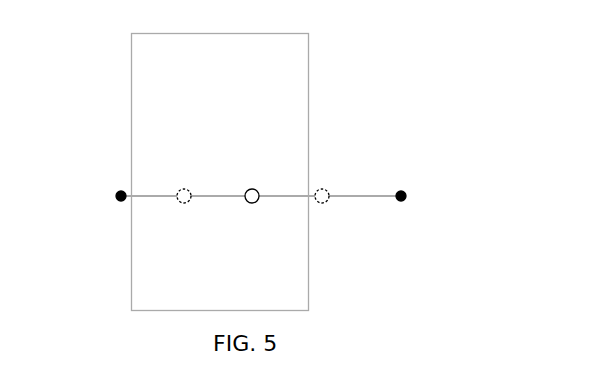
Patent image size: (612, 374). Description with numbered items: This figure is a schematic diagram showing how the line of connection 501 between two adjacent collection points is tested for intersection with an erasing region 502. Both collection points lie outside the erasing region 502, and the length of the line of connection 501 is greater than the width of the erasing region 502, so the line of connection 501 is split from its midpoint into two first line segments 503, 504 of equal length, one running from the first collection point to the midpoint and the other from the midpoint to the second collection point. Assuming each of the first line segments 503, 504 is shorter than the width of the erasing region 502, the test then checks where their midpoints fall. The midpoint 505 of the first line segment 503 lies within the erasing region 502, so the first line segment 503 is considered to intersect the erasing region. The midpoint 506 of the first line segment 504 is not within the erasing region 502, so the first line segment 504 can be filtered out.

The line of connection 501 is at (130, 195).
The erasing region 502 is at (308, 80).
The first line segment 503 is at (168, 196).
The first line segment 504 is at (297, 196).
The midpoint of the first line segment 505 is at (185, 190).
The midpoint of the first line segment 506 is at (328, 190).